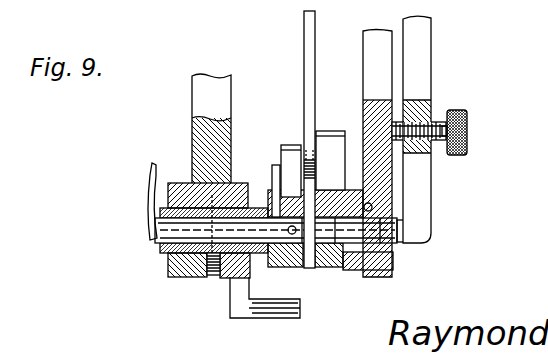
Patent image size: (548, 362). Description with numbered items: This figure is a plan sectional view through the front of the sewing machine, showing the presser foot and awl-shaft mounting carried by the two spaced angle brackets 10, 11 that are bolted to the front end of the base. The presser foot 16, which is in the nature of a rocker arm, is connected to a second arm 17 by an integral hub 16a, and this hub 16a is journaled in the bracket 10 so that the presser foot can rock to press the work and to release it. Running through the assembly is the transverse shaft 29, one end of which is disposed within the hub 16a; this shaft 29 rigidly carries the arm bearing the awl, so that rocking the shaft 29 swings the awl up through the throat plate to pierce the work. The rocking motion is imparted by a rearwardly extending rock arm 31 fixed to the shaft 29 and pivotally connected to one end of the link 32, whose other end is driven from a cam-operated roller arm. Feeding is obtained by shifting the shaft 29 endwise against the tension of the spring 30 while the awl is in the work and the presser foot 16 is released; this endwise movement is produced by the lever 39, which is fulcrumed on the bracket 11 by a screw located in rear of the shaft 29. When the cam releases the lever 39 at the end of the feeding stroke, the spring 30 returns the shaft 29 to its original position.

The angle bracket 10 is at (205, 91).
The angle bracket 11 is at (383, 70).
The presser foot 16 is at (276, 312).
The integral hub 16a is at (207, 272).
The second arm 17 is at (285, 152).
The transverse shaft 29 is at (338, 270).
The spring 30 is at (147, 190).
The rock arm 31 is at (334, 131).
The link 32 is at (313, 37).
The lever 39 is at (432, 194).